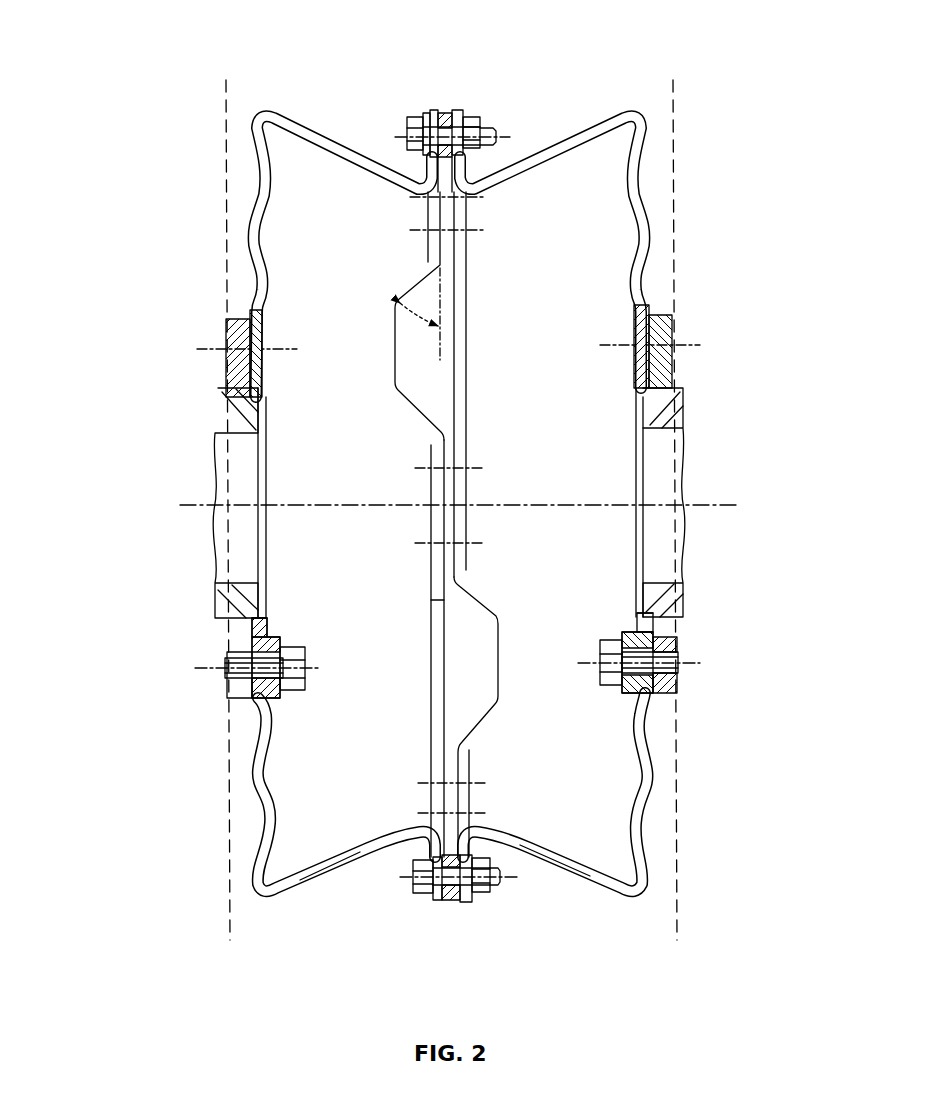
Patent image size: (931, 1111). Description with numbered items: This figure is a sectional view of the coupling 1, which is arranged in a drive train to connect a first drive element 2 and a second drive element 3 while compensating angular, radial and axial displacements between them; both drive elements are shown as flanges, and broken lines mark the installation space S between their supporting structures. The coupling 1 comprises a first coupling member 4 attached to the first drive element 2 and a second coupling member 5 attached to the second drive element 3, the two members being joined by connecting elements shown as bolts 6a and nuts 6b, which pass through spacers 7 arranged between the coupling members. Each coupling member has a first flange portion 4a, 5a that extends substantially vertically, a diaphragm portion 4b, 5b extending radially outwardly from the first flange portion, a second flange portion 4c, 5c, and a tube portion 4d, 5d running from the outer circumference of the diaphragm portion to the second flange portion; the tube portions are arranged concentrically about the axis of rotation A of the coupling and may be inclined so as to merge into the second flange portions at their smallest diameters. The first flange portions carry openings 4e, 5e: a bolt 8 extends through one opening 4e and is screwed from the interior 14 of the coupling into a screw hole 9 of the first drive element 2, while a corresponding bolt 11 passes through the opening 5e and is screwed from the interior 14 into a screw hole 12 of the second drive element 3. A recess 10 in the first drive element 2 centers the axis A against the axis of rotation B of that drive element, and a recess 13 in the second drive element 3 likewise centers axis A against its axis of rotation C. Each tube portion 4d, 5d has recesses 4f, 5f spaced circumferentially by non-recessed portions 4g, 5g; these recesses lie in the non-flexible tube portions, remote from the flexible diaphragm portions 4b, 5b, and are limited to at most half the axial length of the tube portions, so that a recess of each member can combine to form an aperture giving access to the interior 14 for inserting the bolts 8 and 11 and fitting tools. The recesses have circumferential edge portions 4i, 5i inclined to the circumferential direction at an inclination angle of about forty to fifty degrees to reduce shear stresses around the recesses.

The coupling 1 is at (168, 67).
The first drive element 2 is at (233, 337).
The second drive element 3 is at (660, 330).
The first coupling member 4 is at (262, 185).
The first flange portion 4a is at (253, 698).
The diaphragm portion 4b is at (262, 810).
The second flange portion 4c is at (430, 900).
The tube portion 4d is at (328, 885).
The openings 4e is at (252, 640).
The recesses 4f is at (395, 322).
The non-recessed portions 4g is at (415, 672).
The circumferential edge portions 4i is at (415, 290).
The second coupling member 5 is at (634, 185).
The first flange portion 5a is at (657, 693).
The diaphragm portion 5b is at (648, 863).
The second flange portion 5c is at (468, 900).
The tube portion 5d is at (555, 862).
The opening 5e is at (653, 643).
The recesses 5f is at (500, 680).
The non-recessed portions 5g is at (470, 330).
The circumferential edge portions 5i is at (487, 713).
The bolts 6a is at (405, 120).
The nuts 6b is at (478, 118).
The spacers 7 is at (440, 118).
The bolt 8 is at (253, 650).
The screw hole 9 is at (227, 677).
The recess 10 is at (212, 392).
The bolt 11 is at (612, 655).
The screw hole 12 is at (675, 675).
The recess 13 is at (660, 400).
The interior 14 is at (458, 312).
The installation space S is at (655, 155).
The axis of rotation A is at (390, 500).
The axis of rotation B is at (180, 503).
The axis of rotation C is at (690, 503).